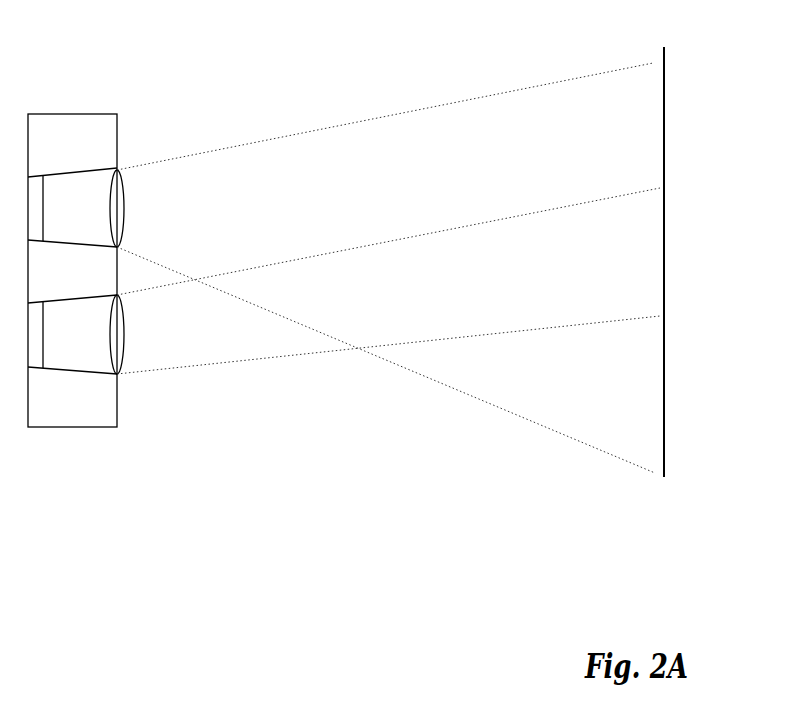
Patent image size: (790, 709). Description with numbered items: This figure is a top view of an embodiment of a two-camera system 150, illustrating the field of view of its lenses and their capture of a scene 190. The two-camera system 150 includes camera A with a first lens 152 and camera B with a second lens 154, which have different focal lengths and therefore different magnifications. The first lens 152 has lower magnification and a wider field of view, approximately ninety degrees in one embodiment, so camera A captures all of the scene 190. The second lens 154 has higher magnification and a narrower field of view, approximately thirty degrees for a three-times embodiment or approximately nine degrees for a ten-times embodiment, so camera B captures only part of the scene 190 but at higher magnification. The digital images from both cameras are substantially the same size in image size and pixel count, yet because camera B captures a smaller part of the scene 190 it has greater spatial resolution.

The two-camera system 150 is at (75, 113).
The first lens 152 is at (120, 206).
The second lens 154 is at (124, 342).
The scene 190 is at (664, 73).